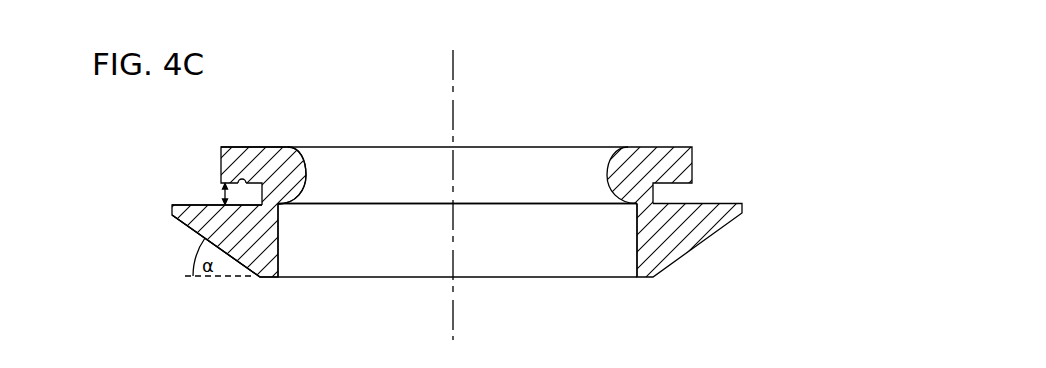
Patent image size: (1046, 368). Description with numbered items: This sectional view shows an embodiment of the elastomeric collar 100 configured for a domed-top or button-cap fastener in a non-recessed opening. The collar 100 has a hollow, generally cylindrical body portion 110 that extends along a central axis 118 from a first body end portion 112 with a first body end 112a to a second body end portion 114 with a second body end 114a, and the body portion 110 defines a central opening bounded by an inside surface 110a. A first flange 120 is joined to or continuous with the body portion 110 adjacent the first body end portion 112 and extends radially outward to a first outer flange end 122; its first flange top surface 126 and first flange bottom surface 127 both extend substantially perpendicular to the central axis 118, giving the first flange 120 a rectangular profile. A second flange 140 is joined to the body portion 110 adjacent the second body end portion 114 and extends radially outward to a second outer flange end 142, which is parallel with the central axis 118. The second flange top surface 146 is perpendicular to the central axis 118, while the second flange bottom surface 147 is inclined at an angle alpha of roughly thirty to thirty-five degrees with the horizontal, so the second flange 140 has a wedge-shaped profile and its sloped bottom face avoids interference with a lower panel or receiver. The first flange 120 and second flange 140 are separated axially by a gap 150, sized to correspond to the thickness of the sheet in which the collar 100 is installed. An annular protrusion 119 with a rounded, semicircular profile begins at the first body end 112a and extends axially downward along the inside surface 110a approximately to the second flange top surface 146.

The collar 100 is at (763, 110).
The body portion 110 is at (648, 227).
The inside surface 110a is at (280, 229).
The first body end portion 112 is at (292, 172).
The first body end 112a is at (288, 148).
The second body end portion 114 is at (270, 253).
The second body end 114a is at (272, 276).
The central axis 118 is at (453, 73).
The annular protrusion 119 is at (607, 177).
The first flange 120 is at (665, 165).
The first outer flange end 122 is at (221, 165).
The first flange top surface 126 is at (240, 147).
The first flange bottom surface 127 is at (242, 180).
The second flange 140 is at (682, 228).
The second outer flange end 142 is at (172, 207).
The second flange top surface 146 is at (190, 205).
The second flange bottom surface 147 is at (192, 233).
The gap 150 is at (222, 186).